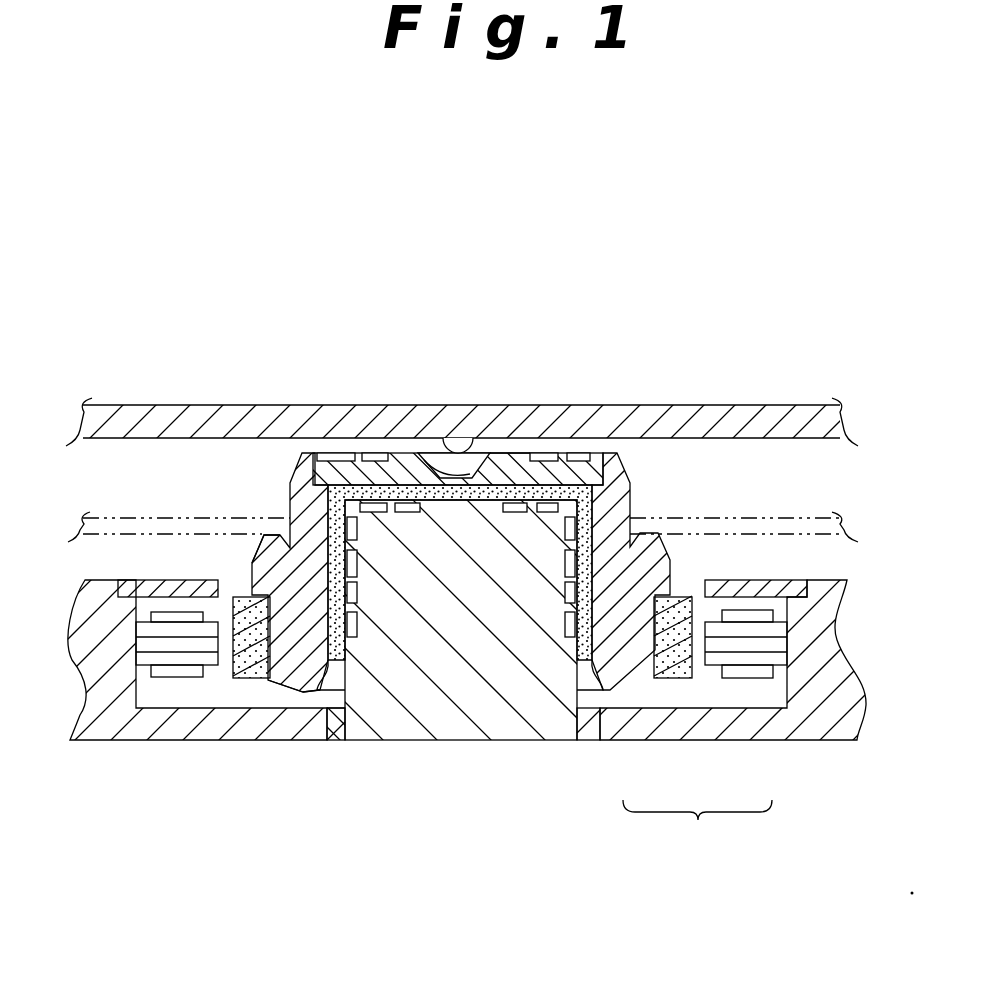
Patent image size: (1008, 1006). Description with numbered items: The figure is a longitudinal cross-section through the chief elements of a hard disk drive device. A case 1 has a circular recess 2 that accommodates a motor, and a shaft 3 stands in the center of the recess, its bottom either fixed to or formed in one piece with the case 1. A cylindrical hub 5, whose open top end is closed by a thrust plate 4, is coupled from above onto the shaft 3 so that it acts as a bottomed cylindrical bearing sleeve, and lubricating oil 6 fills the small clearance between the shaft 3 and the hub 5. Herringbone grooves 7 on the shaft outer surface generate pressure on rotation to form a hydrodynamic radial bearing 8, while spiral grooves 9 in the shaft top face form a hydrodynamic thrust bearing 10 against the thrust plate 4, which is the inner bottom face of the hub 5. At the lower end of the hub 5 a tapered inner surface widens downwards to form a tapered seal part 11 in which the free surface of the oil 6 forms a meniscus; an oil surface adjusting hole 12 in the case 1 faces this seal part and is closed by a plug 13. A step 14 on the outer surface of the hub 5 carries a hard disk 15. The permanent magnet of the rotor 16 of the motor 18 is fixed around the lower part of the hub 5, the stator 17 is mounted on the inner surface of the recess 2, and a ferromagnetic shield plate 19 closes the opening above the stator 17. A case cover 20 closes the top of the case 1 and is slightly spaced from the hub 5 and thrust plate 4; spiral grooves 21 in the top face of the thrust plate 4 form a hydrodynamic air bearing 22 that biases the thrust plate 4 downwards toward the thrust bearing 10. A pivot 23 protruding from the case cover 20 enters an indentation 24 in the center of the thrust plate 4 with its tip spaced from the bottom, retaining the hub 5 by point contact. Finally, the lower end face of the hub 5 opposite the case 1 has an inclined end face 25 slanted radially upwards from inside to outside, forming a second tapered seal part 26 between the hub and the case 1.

The case 1 is at (85, 745).
The circular recess 2 is at (212, 708).
The shaft 3 is at (486, 703).
The thrust plate 4 is at (513, 470).
The cylindrical hub 5 is at (291, 477).
The lubricating fluid or oil 6 is at (330, 472).
The herringbone grooves 7 is at (358, 616).
The hydrodynamic radial bearing 8 is at (585, 534).
The spiral grooves 9 is at (545, 513).
The hydrodynamic thrust bearing 10 is at (575, 493).
The tapered seal part 11 is at (347, 708).
The oil surface adjusting hole 12 is at (318, 744).
The plug 13 is at (340, 744).
The step 14 is at (290, 552).
The hard disk 15 is at (203, 518).
The rotor 16 is at (670, 680).
The stator 17 is at (750, 648).
The motor 18 is at (697, 835).
The shield plate 19 is at (763, 582).
The case cover 20 is at (784, 405).
The spiral grooves 21 is at (575, 456).
The hydrodynamic air bearing 22 is at (371, 452).
The pivot 23 is at (461, 445).
The indentation 24 is at (413, 455).
The inclined end face 25 is at (306, 688).
The second tapered seal part 26 is at (296, 693).